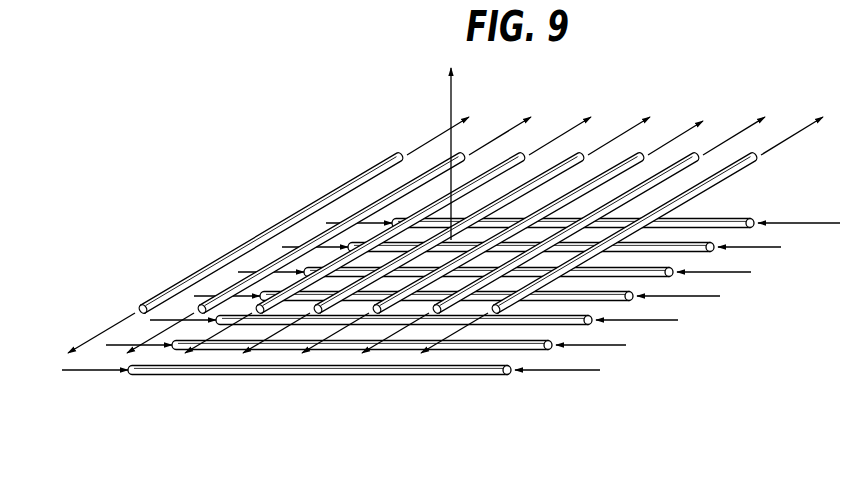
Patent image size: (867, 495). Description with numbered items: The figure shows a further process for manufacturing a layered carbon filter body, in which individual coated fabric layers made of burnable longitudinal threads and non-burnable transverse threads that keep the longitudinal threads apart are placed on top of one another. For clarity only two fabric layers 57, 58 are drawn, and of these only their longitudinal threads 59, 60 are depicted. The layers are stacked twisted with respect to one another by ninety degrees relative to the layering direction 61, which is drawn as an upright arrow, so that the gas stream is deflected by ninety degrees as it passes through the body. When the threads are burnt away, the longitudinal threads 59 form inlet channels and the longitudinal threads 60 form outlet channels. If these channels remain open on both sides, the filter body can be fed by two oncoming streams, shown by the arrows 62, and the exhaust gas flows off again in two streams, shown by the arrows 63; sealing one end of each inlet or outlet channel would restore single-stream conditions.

The fabric layer 57 is at (364, 237).
The fabric layer 58 is at (463, 380).
The longitudinal threads 59 is at (522, 348).
The longitudinal threads 60 is at (262, 318).
The layering direction 61 is at (449, 112).
The arrows 62 is at (125, 341).
The arrows 63 is at (725, 138).